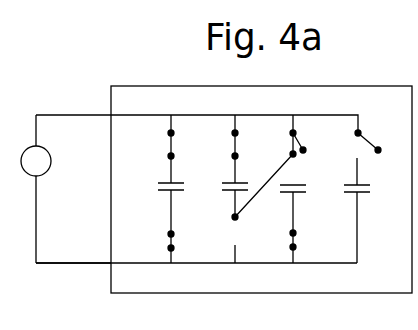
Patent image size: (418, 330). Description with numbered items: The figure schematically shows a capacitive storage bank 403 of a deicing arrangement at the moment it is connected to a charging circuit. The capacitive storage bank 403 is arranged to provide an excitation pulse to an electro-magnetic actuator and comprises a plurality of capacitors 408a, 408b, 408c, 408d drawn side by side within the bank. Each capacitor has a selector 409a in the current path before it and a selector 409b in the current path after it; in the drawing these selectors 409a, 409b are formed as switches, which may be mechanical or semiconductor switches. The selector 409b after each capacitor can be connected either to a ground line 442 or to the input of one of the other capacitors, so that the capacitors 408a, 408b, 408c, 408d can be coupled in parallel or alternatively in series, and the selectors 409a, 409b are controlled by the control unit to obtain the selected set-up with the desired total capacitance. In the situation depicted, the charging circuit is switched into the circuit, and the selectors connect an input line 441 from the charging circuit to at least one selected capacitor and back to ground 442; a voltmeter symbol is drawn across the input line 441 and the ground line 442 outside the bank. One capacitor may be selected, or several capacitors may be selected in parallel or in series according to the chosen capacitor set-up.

The capacitive storage bank 403 is at (168, 85).
The input line 441 is at (80, 117).
The ground line 442 is at (50, 267).
The capacitor 408a is at (157, 192).
The capacitor 408b is at (223, 183).
The capacitor 408c is at (302, 192).
The capacitor 408d is at (365, 195).
The selector 409a is at (197, 147).
The selector 409b is at (168, 237).